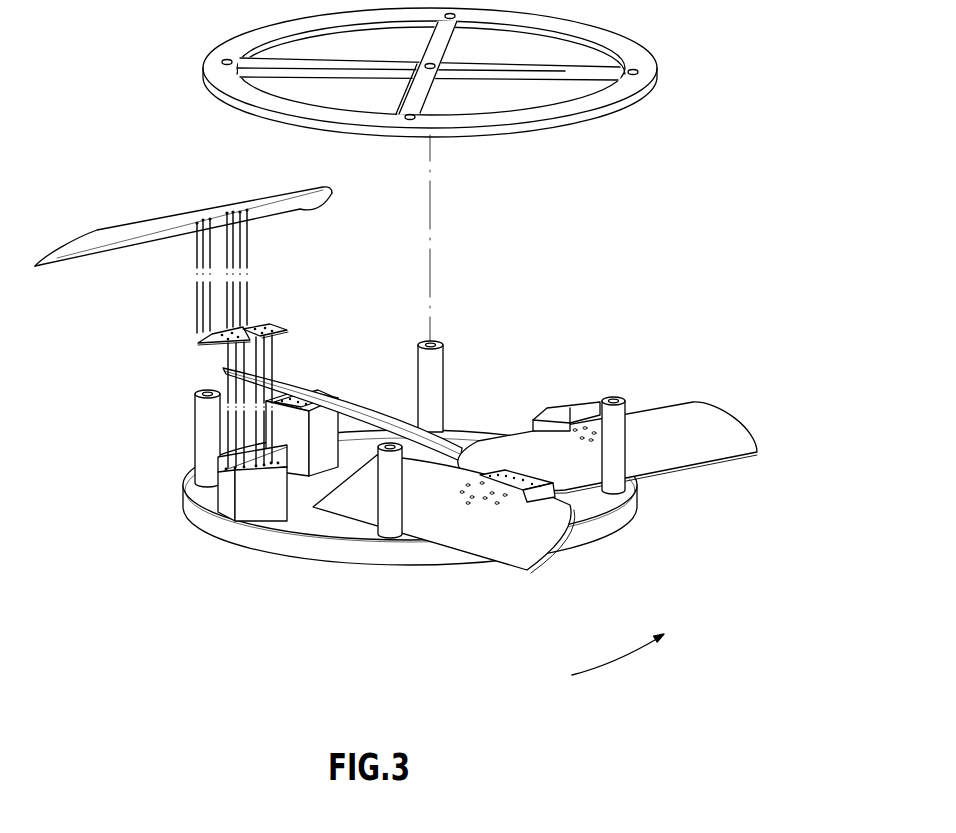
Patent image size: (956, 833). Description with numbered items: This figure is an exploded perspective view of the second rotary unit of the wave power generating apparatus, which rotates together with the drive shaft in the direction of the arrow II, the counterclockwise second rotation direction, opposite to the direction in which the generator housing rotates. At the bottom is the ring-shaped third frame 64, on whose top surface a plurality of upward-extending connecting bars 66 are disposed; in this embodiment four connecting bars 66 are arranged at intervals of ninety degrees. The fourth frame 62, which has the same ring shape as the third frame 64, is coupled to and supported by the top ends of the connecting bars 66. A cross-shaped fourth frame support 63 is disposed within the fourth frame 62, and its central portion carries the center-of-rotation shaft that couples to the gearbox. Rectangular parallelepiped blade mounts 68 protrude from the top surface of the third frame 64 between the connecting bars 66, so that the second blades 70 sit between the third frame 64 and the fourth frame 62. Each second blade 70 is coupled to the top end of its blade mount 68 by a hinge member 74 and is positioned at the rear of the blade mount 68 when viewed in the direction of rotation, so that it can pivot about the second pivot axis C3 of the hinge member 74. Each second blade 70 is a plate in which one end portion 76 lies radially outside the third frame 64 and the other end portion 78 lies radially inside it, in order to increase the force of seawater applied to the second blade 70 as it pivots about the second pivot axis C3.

The fourth frame 62 is at (463, 110).
The fourth frame support 63 is at (420, 92).
The third frame 64 is at (635, 503).
The connecting bars 66 is at (391, 530).
The blade mounts 68 is at (258, 497).
The second blades 70 is at (101, 250).
The hinge members 74 is at (283, 325).
The one end portion 76 is at (186, 246).
The other end portion 78 is at (290, 224).
The second pivot axis C3 is at (230, 326).
The arrow II is at (632, 660).